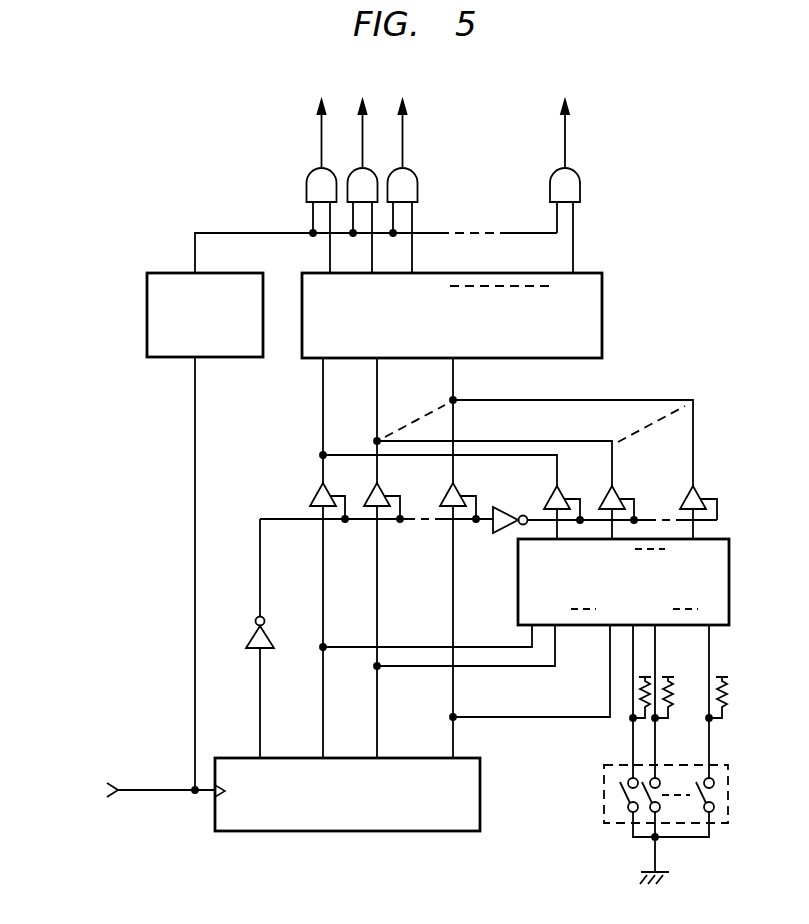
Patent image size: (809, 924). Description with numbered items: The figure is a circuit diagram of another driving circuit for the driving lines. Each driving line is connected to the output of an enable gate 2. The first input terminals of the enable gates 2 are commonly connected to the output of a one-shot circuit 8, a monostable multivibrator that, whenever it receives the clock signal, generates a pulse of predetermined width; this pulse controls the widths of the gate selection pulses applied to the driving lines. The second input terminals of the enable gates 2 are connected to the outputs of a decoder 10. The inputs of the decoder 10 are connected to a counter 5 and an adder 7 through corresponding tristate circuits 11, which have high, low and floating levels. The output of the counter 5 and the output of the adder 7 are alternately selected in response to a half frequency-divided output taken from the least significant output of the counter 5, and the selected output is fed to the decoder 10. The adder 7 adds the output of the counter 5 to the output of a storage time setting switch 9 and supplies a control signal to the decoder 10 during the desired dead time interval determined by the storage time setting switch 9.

The enable gate 2 is at (580, 189).
The counter 5 is at (482, 786).
The adder 7 is at (730, 560).
The one-shot circuit 8 is at (147, 291).
The storage time setting switch 9 is at (728, 795).
The decoder 10 is at (603, 300).
The tristate circuit 11 is at (686, 494).